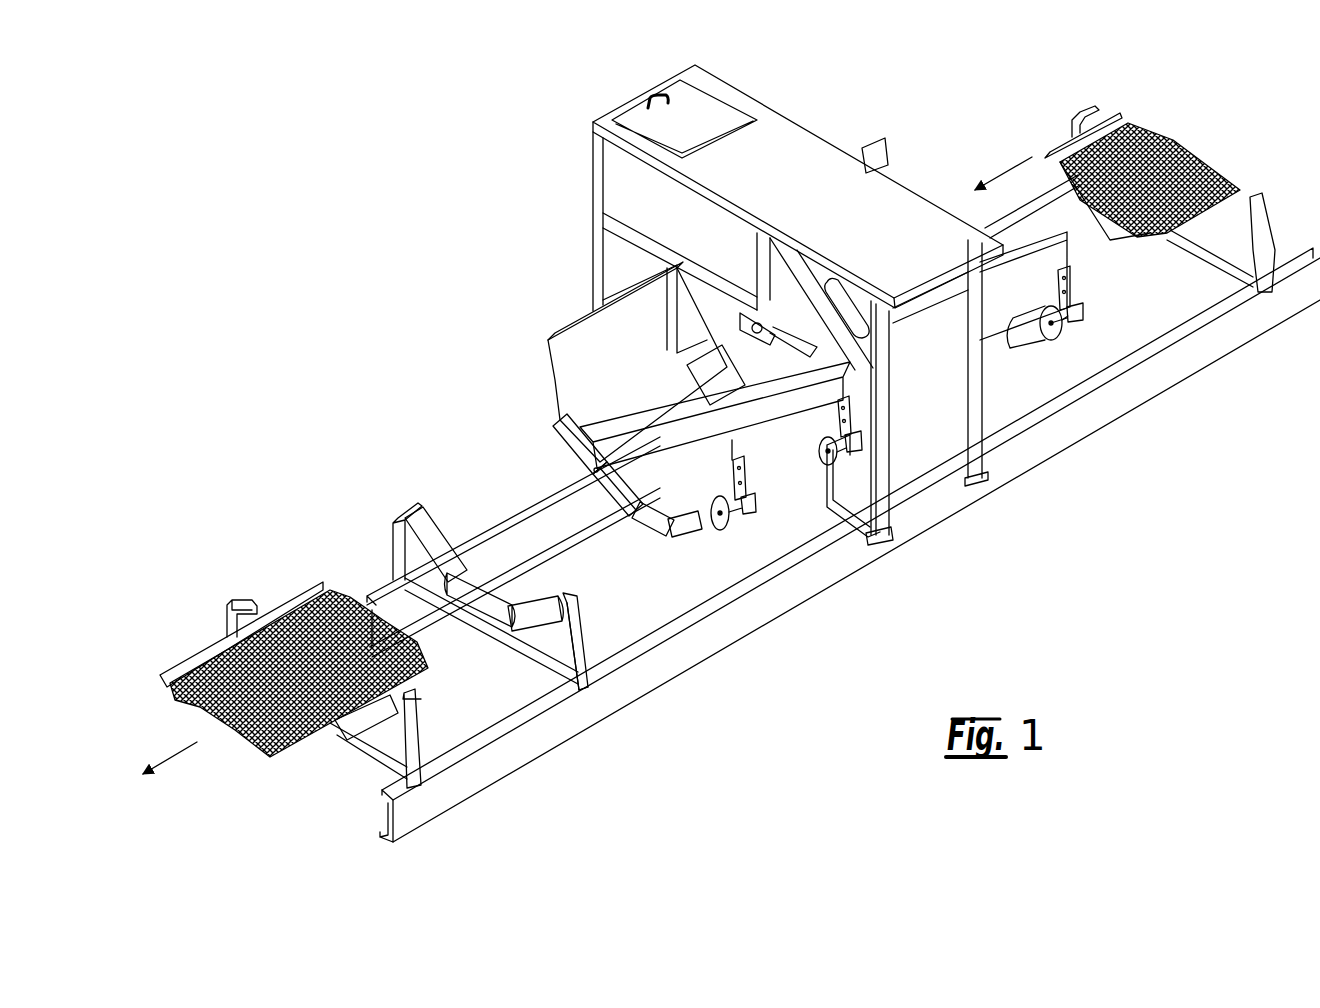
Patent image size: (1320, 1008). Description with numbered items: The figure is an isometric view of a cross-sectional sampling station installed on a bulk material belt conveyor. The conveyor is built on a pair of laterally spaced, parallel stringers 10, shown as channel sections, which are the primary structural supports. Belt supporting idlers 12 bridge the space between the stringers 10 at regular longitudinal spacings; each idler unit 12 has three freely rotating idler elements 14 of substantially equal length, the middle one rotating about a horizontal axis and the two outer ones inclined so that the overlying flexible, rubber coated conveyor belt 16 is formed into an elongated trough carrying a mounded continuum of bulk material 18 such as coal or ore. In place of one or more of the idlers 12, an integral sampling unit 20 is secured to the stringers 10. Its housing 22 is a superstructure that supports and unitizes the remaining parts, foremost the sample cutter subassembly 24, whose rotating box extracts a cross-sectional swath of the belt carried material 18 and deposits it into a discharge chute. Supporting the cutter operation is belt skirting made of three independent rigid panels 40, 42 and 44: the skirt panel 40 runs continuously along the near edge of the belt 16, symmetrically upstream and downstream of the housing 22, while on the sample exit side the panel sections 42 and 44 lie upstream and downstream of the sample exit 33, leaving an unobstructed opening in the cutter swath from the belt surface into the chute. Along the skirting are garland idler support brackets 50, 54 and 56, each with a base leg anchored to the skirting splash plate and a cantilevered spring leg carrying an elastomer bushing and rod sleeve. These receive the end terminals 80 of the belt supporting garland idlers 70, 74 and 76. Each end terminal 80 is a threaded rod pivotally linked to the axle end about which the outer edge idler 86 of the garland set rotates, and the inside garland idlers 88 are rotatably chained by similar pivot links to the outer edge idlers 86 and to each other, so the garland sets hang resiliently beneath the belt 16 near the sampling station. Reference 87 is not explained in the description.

The stringers 10 is at (470, 528).
The belt supporting idlers 12 is at (590, 650).
The idler elements 14 is at (482, 593).
The conveyor belt 16 is at (313, 592).
The bulk material 18 is at (290, 640).
The integral unit 20 is at (575, 142).
The housing 22 is at (930, 335).
The sample cutter subassembly 24 is at (687, 363).
The sample exit 33 is at (763, 400).
The skirt panel 40 is at (780, 447).
The skirt panel section 42 is at (872, 165).
The skirt panel section 44 is at (567, 352).
The garland idler support bracket 50 is at (1070, 287).
The garland idler support bracket 54 is at (862, 460).
The garland idler support bracket 56 is at (740, 490).
The garland idler 70 is at (1053, 343).
The garland idler 74 is at (850, 453).
The garland idler 76 is at (728, 516).
The end terminal 80 is at (746, 507).
The outer edge idler 86 is at (563, 445).
The roller axle 87 is at (1040, 330).
The inside garland idlers 88 is at (667, 527).